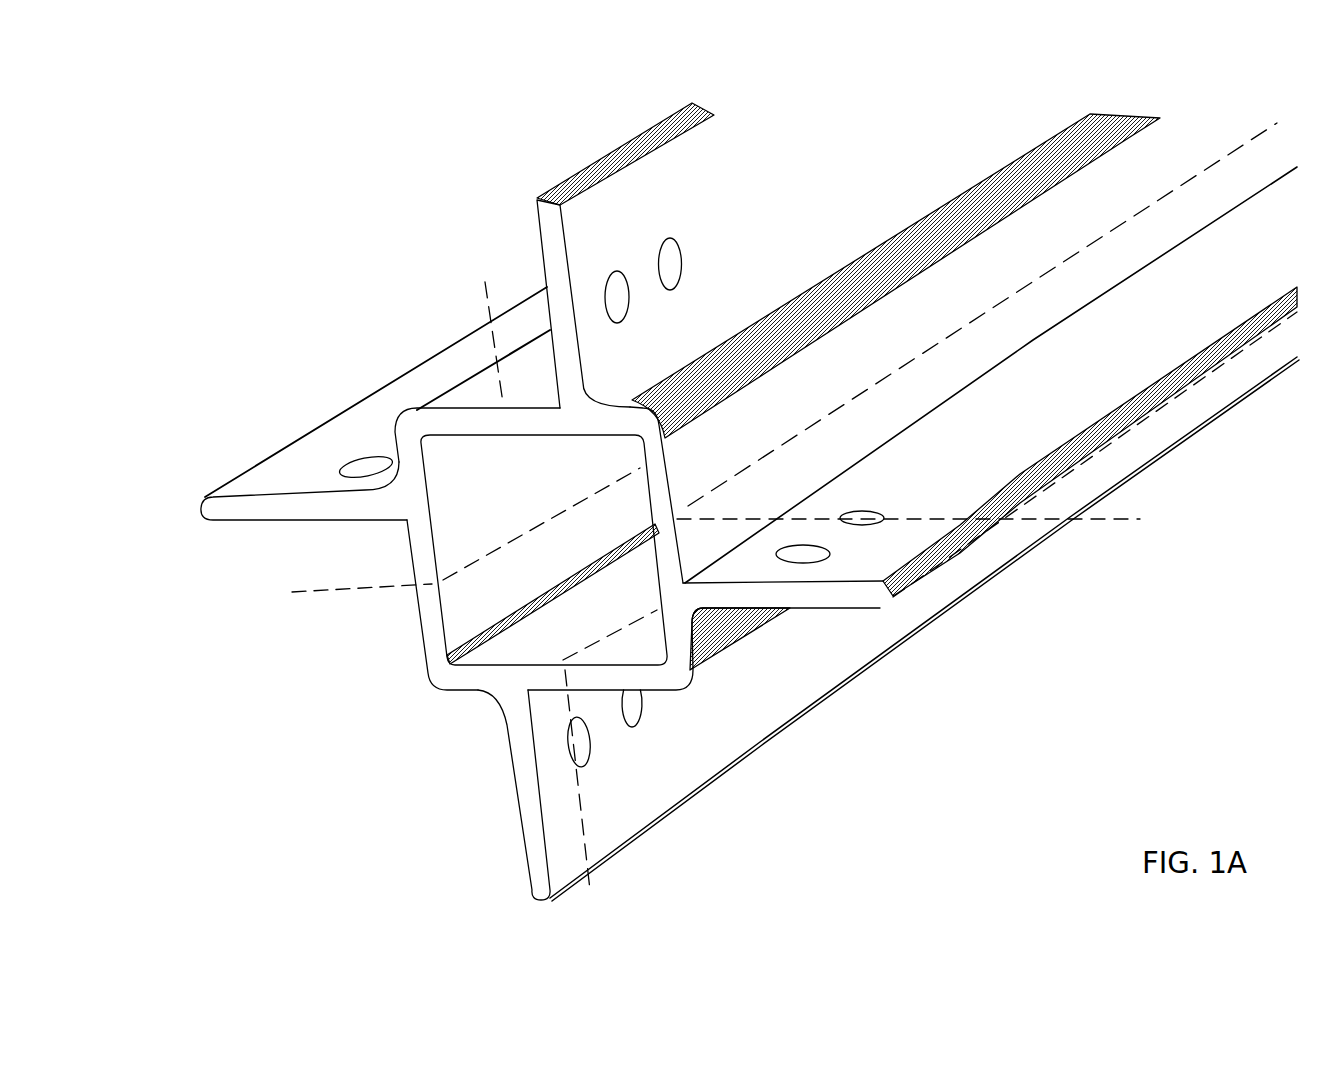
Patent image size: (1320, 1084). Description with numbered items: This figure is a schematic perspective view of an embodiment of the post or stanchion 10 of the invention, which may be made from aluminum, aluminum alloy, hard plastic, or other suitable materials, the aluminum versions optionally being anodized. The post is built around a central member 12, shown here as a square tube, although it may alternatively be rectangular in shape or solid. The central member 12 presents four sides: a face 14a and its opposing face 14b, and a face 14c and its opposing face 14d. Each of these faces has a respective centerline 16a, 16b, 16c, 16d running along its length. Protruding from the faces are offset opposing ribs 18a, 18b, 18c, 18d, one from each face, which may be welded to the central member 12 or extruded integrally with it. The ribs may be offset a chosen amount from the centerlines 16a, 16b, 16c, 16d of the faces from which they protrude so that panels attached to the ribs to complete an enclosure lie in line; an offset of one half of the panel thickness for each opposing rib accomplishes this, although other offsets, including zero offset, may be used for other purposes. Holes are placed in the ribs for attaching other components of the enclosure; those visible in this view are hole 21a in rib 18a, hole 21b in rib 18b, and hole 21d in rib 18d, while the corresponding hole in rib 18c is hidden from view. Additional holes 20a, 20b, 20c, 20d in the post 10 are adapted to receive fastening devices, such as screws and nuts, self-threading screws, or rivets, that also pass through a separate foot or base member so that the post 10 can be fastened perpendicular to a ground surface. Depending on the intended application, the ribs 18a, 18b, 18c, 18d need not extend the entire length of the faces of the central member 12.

The post 10 is at (483, 702).
The central member 12 is at (415, 652).
The face 14a is at (650, 692).
The opposing face 14b is at (470, 408).
The face 14c is at (415, 613).
The opposing face 14d is at (680, 545).
The centerline 16a is at (590, 892).
The centerline 16b is at (488, 300).
The centerline 16c is at (330, 590).
The centerline 16d is at (1140, 520).
The rib 18a is at (807, 710).
The rib 18b is at (598, 170).
The rib 18c is at (326, 421).
The rib 18d is at (1093, 450).
The hole 20a is at (585, 762).
The hole 20b is at (605, 300).
The hole 20c is at (340, 466).
The hole 20d is at (812, 561).
The hole 21a is at (635, 727).
The hole 21b is at (657, 255).
The hole 21d is at (870, 523).